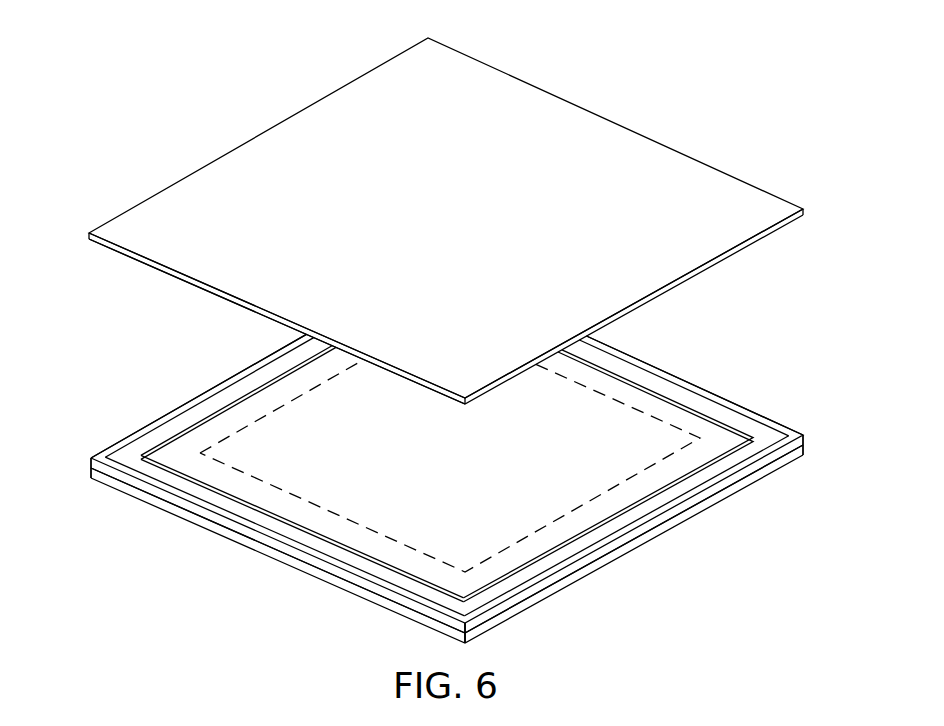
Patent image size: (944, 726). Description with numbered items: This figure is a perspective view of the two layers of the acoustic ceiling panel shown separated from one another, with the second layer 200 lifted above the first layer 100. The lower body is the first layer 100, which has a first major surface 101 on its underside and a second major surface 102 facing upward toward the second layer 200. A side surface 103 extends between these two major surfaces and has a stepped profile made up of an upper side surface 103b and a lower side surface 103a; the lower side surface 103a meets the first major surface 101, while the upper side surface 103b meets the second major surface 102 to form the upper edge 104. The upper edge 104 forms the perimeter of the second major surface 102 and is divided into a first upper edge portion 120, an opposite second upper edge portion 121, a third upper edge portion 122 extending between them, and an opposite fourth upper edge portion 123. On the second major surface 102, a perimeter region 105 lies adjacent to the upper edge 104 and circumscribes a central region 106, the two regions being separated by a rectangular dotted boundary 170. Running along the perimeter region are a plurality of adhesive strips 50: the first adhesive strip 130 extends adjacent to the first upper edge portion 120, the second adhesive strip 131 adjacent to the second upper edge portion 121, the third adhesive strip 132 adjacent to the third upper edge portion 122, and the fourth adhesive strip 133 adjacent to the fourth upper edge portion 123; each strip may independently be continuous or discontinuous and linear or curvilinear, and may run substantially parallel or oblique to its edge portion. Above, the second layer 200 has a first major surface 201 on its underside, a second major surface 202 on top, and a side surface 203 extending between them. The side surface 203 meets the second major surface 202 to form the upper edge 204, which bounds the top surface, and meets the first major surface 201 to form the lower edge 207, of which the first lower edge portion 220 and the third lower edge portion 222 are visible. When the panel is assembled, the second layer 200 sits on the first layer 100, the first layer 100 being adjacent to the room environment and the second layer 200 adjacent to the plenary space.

The second layer 200 is at (446, 214).
The first major surface of the second layer 201 is at (228, 312).
The second major surface of the second layer 202 is at (578, 142).
The side surface of the second layer 203 is at (768, 235).
The upper edge of the second layer 204 is at (168, 185).
The lower edge of the second layer 207 is at (453, 303).
The first lower edge portion 220 is at (725, 262).
The third lower edge portion 222 is at (160, 273).
The first layer 100 is at (444, 505).
The first major surface of the first layer 101 is at (452, 636).
The second major surface of the first layer 102 is at (459, 499).
The perimeter region 105 is at (698, 402).
The central region 106 is at (588, 603).
The side surface of the first layer 103 is at (460, 563).
The lower side surface 103a is at (356, 589).
The upper side surface 103b is at (403, 603).
The upper edge of the first layer 104 is at (432, 476).
The first upper edge portion 120 is at (593, 560).
The second upper edge portion 121 is at (158, 438).
The third upper edge portion 122 is at (250, 530).
The fourth upper edge portion 123 is at (645, 368).
The frame 50 is at (444, 477).
The first adhesive strip 130 is at (672, 490).
The second adhesive strip 131 is at (243, 396).
The third adhesive strip 132 is at (185, 496).
The fourth adhesive strip 133 is at (740, 423).
The dotted boundary 170 is at (172, 464).